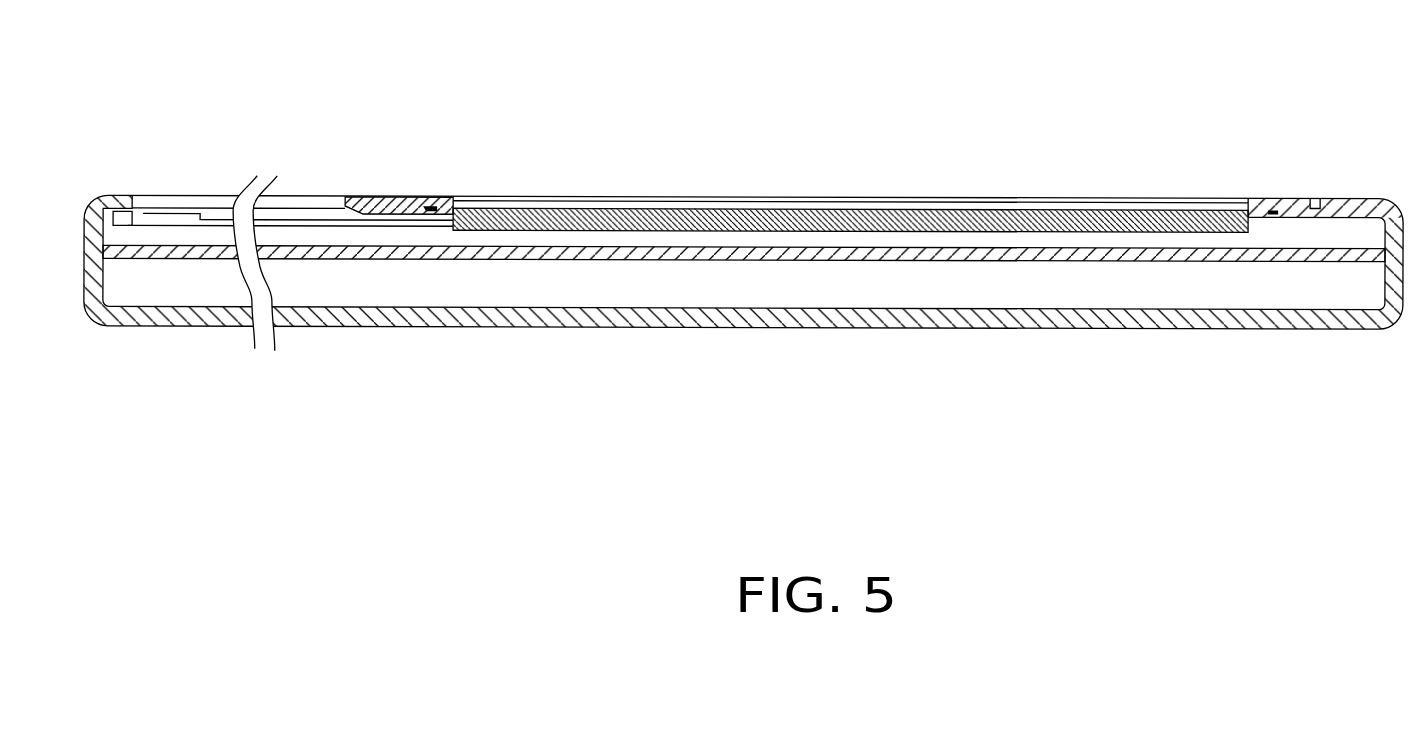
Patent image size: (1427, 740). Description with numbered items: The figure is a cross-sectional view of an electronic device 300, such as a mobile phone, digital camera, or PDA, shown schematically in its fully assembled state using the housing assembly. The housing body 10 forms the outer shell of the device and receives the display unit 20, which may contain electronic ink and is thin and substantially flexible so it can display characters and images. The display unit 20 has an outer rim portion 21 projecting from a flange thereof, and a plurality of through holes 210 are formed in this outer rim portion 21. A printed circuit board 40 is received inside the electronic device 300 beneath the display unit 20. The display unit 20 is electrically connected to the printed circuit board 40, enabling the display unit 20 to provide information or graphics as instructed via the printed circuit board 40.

The electronic device 300 is at (743, 211).
The housing body 10 is at (1352, 199).
The display unit 20 is at (529, 214).
The outer rim portion 21 is at (423, 200).
The through holes 210 is at (438, 199).
The printed circuit board 40 is at (889, 256).